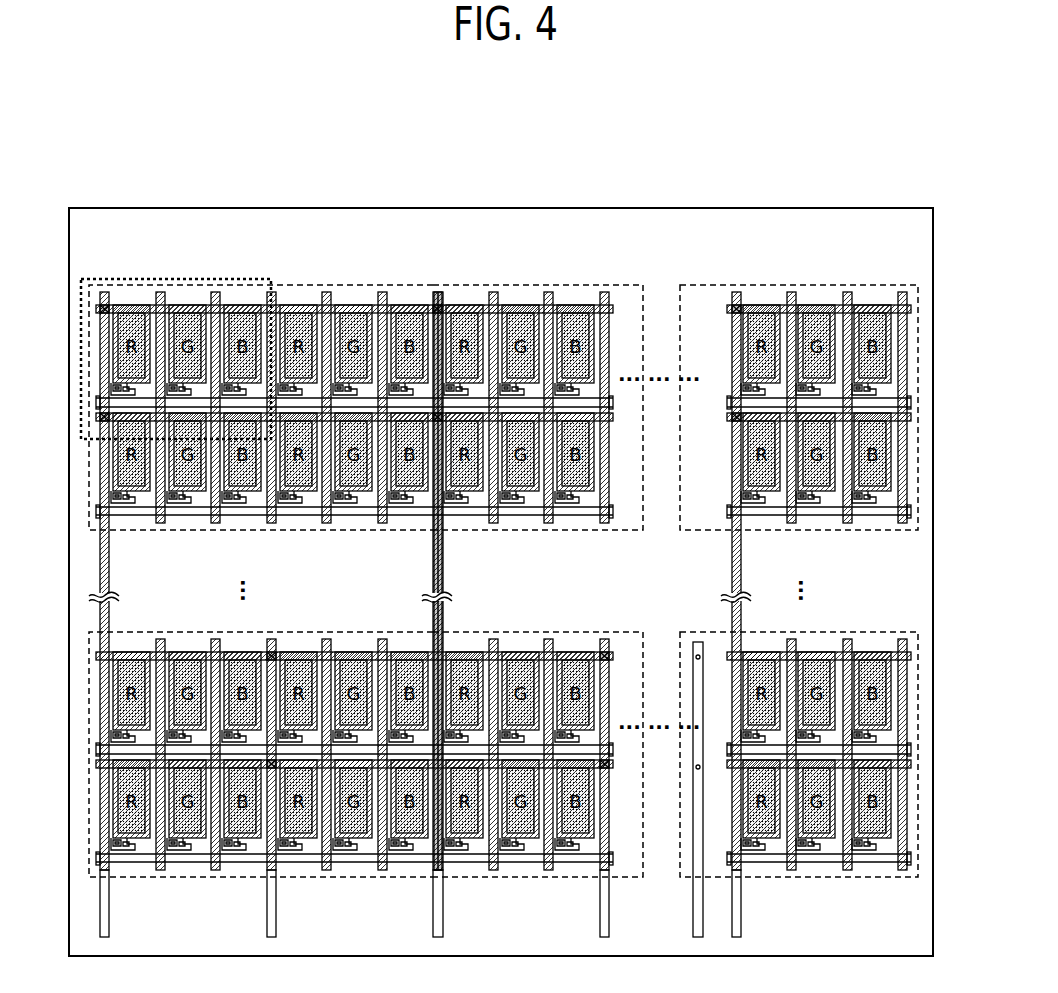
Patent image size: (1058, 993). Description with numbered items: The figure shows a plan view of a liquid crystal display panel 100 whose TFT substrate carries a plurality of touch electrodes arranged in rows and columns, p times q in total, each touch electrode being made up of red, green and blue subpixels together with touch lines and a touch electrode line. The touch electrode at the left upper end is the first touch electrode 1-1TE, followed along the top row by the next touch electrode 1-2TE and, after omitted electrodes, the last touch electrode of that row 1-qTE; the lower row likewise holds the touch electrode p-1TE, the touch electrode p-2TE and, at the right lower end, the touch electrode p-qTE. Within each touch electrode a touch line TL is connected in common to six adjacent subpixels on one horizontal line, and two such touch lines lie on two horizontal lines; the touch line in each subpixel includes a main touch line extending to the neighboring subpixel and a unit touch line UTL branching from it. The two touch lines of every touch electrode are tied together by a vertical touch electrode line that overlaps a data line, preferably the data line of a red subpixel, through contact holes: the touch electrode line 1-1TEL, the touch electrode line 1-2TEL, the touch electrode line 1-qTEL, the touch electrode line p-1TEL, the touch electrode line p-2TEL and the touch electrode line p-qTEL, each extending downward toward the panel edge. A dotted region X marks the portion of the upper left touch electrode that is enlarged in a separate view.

The liquid crystal display panel 100 is at (672, 208).
The region X is at (240, 279).
The 1-1st touch electrode 1-1TE is at (305, 285).
The 1-2nd touch electrode 1-2TE is at (627, 285).
The 1-qth touch electrode 1-qTE is at (838, 285).
The p-1st touch electrode p-1TE is at (181, 632).
The p-2nd touch electrode p-2TE is at (532, 632).
The p-qth touch electrode p-qTE is at (867, 632).
The touch line TL is at (372, 292).
The unit touch line UTL is at (406, 306).
The 1-1st touch electrode line 1-1TEL is at (110, 921).
The p-1st touch electrode line p-1TEL is at (277, 921).
The 1-2nd touch electrode line 1-2TEL is at (444, 921).
The p-2nd touch electrode line p-2TEL is at (600, 890).
The p-qth touch electrode line p-qTEL is at (693, 923).
The 1-qth touch electrode line 1-qTEL is at (742, 921).